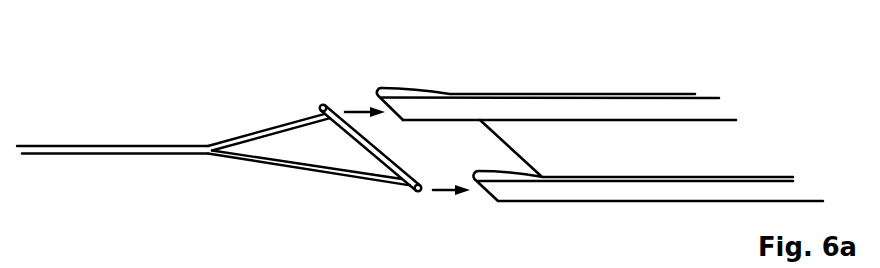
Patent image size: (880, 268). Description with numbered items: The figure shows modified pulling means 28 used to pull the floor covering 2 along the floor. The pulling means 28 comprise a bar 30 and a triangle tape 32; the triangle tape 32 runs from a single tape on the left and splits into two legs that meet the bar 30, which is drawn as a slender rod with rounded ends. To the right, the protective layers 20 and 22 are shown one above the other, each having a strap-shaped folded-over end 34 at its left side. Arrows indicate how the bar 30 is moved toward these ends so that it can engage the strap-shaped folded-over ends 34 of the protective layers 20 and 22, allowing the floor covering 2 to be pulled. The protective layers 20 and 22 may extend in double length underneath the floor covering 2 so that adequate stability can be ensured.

The floor covering 2 is at (600, 142).
The protective layer 20 is at (556, 72).
The protective layer 22 is at (532, 190).
The pulling means 28 is at (219, 129).
The bar 30 is at (329, 111).
The triangle tape 32 is at (291, 162).
The strap-shaped folded-over end 34 is at (392, 94).